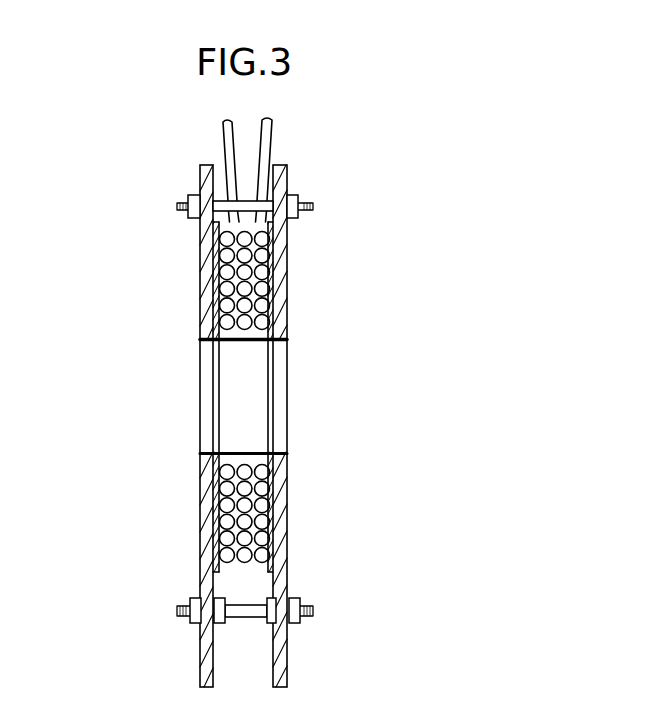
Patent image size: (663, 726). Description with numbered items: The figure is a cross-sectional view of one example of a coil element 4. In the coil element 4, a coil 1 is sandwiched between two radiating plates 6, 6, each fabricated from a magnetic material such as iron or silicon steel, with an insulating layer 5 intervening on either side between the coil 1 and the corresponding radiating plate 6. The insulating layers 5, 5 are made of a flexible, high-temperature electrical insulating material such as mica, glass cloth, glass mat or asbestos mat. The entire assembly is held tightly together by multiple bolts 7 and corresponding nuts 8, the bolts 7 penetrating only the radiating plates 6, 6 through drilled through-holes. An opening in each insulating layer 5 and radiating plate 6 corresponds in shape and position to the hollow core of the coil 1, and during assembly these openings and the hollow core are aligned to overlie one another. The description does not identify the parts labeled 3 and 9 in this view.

The coil 1 is at (244, 272).
The tubes 3 is at (227, 138).
The coil element 4 is at (310, 343).
The insulating layer 5 is at (217, 300).
The radiating plate 6 is at (282, 533).
The bolt 7 is at (312, 200).
The nut 8 is at (197, 195).
The intermediate chamber 9 is at (228, 392).